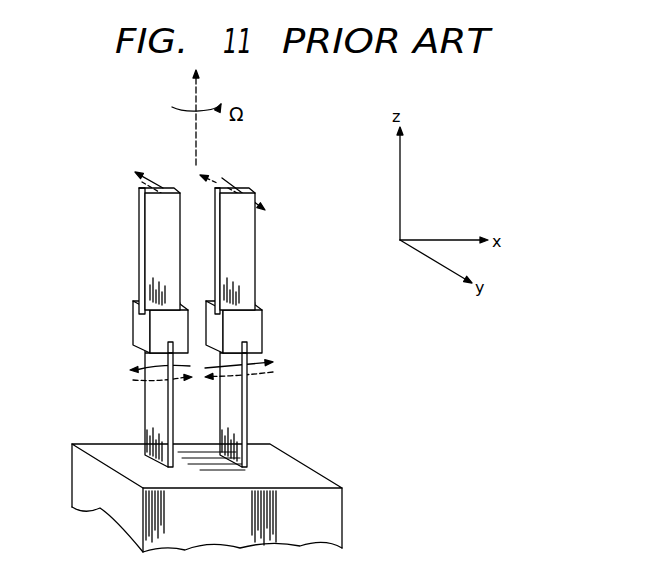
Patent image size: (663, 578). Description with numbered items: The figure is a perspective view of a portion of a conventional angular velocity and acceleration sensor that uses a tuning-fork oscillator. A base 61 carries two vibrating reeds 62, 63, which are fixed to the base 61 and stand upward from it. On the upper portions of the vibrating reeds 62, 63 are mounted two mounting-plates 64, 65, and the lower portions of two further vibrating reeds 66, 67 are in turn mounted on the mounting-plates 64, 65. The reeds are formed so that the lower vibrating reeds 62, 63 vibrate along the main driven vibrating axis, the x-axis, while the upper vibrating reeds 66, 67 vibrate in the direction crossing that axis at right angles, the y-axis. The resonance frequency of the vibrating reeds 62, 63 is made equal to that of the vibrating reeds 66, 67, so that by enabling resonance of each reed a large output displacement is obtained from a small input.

The base 61 is at (293, 463).
The vibrating reed 62 is at (145, 408).
The vibrating reed 63 is at (245, 408).
The mounting-plate 64 is at (145, 337).
The mounting-plate 65 is at (255, 327).
The vibrating reed 66 is at (150, 250).
The vibrating reed 67 is at (250, 238).